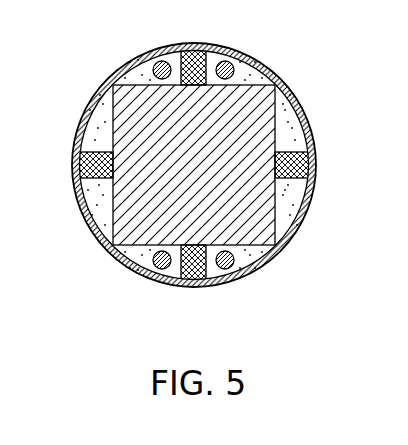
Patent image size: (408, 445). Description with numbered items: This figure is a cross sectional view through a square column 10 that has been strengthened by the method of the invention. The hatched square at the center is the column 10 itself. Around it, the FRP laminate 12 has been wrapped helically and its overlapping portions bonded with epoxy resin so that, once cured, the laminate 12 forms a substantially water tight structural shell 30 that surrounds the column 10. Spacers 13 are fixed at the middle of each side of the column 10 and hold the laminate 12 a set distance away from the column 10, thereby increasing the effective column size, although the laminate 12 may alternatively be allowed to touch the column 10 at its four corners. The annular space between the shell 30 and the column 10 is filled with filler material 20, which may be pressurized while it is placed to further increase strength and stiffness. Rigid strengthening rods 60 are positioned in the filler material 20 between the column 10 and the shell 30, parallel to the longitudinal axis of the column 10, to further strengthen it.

The column 10 is at (267, 115).
The FRP laminate 12 is at (288, 243).
The spacer 13 is at (194, 55).
The filler material 20 is at (296, 200).
The shell 30 is at (98, 93).
The rigid strengthening rod 60 is at (155, 70).